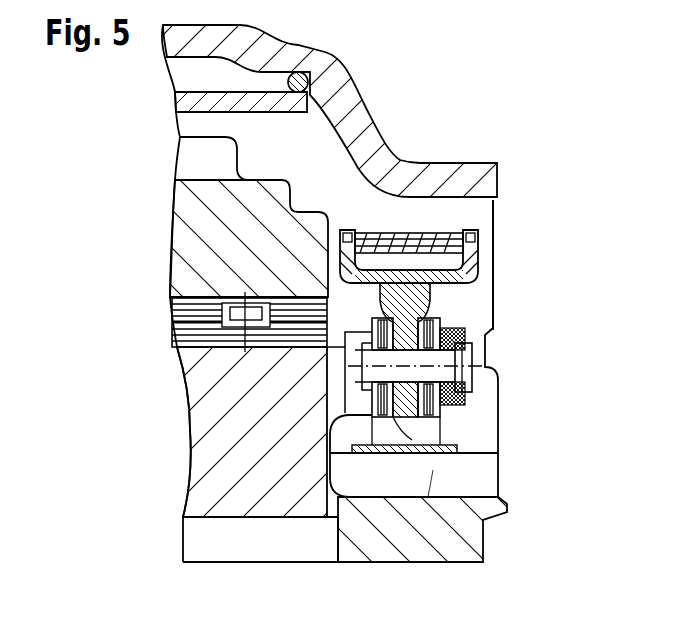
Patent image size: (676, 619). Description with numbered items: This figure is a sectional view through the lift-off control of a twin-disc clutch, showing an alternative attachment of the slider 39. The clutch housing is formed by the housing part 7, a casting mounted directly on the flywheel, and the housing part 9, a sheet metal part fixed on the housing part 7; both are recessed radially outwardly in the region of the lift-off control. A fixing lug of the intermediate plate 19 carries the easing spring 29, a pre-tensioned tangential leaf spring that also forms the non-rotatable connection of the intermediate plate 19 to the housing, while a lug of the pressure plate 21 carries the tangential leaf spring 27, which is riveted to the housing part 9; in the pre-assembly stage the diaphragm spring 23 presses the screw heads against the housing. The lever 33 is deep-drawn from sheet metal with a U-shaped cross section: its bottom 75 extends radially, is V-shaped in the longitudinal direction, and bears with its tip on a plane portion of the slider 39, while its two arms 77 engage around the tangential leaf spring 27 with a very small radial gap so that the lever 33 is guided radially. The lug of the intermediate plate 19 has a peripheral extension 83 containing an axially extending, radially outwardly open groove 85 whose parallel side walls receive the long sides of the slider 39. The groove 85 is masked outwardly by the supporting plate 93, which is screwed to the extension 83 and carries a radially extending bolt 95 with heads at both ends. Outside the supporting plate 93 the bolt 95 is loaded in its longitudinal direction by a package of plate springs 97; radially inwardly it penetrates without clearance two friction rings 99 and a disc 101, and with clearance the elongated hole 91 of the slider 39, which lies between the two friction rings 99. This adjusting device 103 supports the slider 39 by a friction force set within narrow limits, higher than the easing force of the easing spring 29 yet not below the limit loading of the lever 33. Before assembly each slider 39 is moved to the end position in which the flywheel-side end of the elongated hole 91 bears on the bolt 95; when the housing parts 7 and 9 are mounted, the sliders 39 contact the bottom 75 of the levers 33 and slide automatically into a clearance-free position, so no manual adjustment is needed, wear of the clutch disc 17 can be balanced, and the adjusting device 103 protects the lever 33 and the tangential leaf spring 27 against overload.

The housing part 7 is at (500, 497).
The housing part 9 is at (347, 89).
The clutch disc 17 is at (160, 310).
The intermediate plate 19 is at (198, 400).
The pressure plate 21 is at (177, 212).
The diaphragm spring 23 is at (200, 102).
The tangential leaf spring 27 is at (450, 222).
The easing spring 29 is at (435, 453).
The lever 33 is at (480, 243).
The slider 39 is at (420, 288).
The bottom 75 is at (397, 268).
The arm 77 is at (345, 228).
The extension 83 is at (328, 462).
The groove 85 is at (358, 332).
The elongated hole 91 is at (437, 447).
The supporting plate 93 is at (448, 413).
The bolt 95 is at (460, 358).
The package of plate springs 97 is at (467, 400).
The friction ring 99 is at (440, 418).
The disc 101 is at (352, 423).
The adjusting device 103 is at (455, 320).